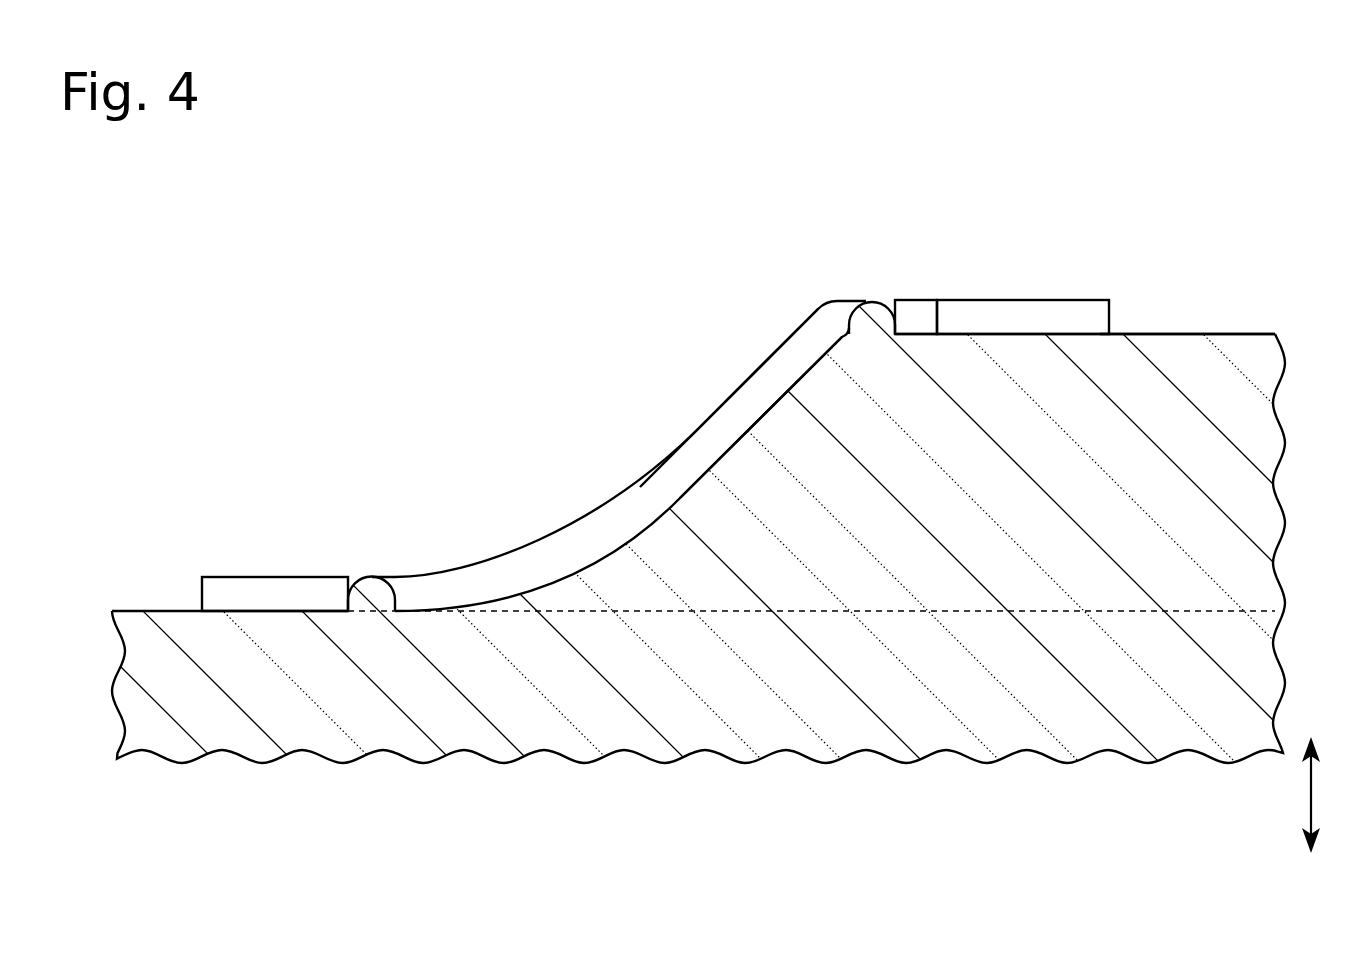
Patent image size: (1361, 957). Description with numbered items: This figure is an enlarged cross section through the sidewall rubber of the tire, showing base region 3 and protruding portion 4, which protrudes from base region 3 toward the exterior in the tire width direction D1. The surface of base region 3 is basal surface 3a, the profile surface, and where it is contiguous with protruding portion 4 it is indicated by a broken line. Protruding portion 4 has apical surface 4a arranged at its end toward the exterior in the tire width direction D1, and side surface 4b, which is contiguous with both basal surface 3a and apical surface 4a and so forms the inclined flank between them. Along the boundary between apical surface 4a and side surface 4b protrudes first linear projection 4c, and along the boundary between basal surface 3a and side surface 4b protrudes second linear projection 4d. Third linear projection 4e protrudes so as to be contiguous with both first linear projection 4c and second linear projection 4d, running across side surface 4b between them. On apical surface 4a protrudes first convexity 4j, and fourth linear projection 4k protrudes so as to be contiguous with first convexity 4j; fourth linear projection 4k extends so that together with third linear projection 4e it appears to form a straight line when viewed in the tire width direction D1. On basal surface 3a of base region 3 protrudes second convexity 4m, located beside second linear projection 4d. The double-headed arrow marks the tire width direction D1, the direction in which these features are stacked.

The base region 3 is at (124, 605).
The basal surface 3a is at (165, 605).
The protruding portion 4 is at (1232, 317).
The apical surface 4a is at (1153, 333).
The side surface 4b is at (686, 485).
The first linear projection 4c is at (875, 300).
The second linear projection 4d is at (375, 575).
The third linear projection 4e is at (725, 405).
The first convexity 4j is at (1025, 298).
The fourth linear projection 4k is at (917, 298).
The second convexity 4m is at (288, 575).
The tire width direction D1 is at (1323, 795).